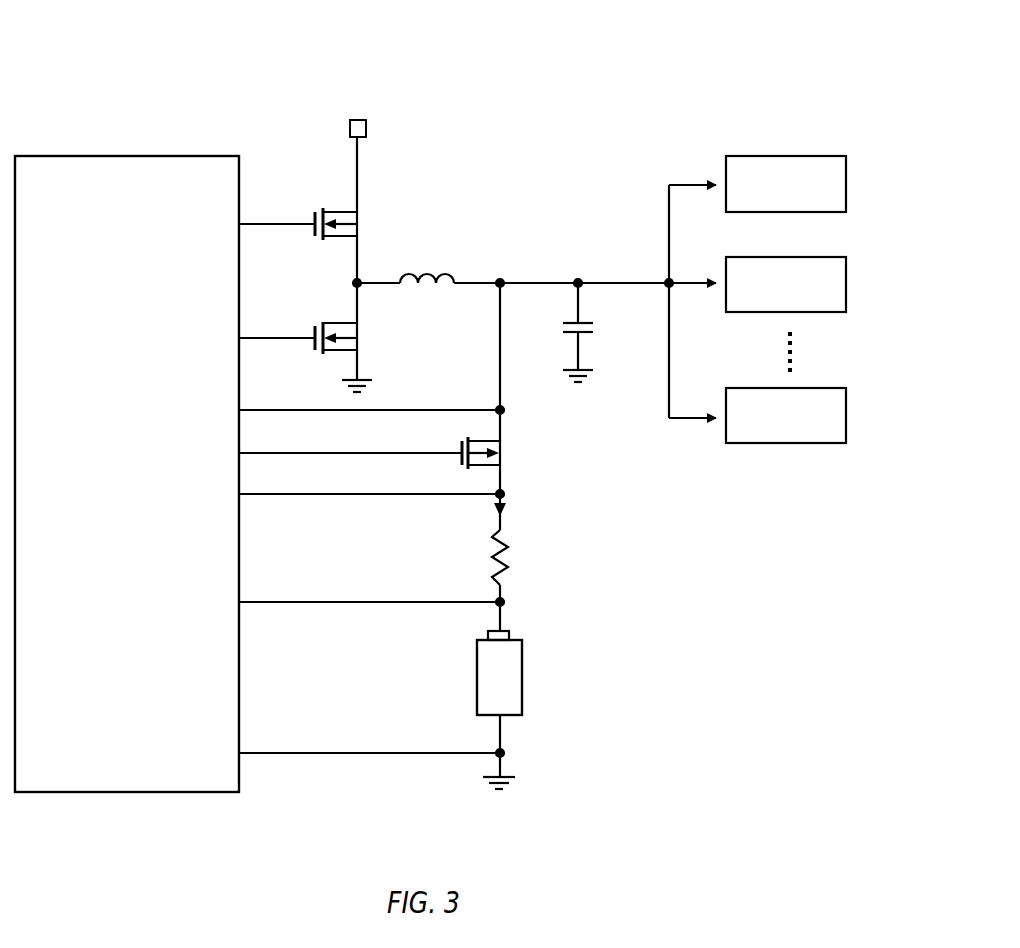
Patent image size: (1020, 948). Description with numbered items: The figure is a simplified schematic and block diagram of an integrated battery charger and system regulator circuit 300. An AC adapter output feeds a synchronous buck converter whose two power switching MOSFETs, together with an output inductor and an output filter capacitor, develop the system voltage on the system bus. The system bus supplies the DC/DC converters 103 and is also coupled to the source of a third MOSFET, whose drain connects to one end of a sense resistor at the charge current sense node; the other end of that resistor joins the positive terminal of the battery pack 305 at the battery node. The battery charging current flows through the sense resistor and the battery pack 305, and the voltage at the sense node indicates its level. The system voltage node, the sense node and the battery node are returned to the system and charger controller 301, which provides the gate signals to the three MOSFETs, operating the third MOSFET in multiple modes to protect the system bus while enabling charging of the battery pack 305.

The integrated battery charger and system regulator circuit 300 is at (186, 76).
The DC/DC converters 103 is at (757, 126).
The system and charger controller 301 is at (139, 527).
The battery pack 305 is at (515, 685).